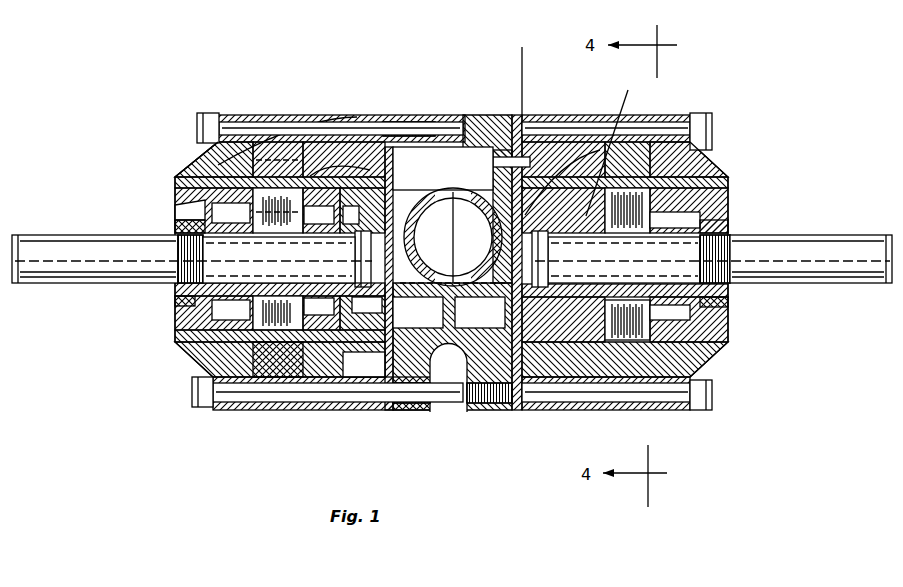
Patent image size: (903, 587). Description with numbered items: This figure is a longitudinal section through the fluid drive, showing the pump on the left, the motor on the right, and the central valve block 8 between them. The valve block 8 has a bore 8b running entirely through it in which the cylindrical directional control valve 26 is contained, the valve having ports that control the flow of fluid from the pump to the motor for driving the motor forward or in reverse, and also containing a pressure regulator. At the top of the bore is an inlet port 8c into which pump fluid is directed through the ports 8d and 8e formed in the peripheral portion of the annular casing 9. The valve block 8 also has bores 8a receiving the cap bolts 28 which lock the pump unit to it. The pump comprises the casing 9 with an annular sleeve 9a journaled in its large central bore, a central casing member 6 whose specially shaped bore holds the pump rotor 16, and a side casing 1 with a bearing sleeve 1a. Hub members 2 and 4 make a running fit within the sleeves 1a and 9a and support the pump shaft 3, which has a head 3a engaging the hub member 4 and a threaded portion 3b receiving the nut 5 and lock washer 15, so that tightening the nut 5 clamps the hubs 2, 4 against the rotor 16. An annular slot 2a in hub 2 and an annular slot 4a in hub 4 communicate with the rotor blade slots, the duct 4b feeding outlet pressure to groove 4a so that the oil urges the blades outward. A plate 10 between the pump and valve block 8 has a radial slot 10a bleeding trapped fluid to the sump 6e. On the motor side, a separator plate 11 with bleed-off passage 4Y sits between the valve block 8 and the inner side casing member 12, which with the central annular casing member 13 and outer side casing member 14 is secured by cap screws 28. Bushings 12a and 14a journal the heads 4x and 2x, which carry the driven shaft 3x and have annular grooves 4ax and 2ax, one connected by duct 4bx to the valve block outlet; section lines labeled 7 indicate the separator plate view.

The side casing 1 is at (205, 358).
The bearing sleeve 1a is at (197, 353).
The hub member 2 is at (195, 206).
The annular slot 2a is at (257, 210).
The annular groove 2ax is at (705, 193).
The head 2x is at (673, 217).
The pump shaft 3 is at (88, 276).
The head 3a is at (362, 312).
The threaded portion 3b is at (178, 290).
The driven shaft 3x is at (800, 244).
The hub member 4 is at (362, 237).
The annular slot 4a is at (321, 313).
The annular groove 4ax is at (617, 144).
The duct 4b is at (321, 210).
The duct 4bx is at (552, 267).
The head 4x is at (545, 290).
The bleed-off passage 4Y is at (480, 312).
The nut 5 is at (200, 225).
The central casing member 6 is at (276, 114).
The sump 6e is at (358, 380).
The section indicator 7 is at (537, 74).
The valve block 8 is at (470, 116).
The bores 8a is at (463, 412).
The bore 8b is at (473, 188).
The inlet port 8c is at (443, 168).
The port 8d is at (214, 152).
The port 8e is at (302, 128).
The annular casing 9 is at (320, 410).
The annular sleeve 9a is at (377, 172).
The plate 10 is at (402, 112).
The radial slot 10a is at (418, 312).
The separator plate 11 is at (513, 114).
The inner side casing member 12 is at (552, 116).
The bushing 12a is at (592, 410).
The central annular casing member 13 is at (640, 116).
The outer side casing member 14 is at (672, 117).
The bushing 14a is at (714, 343).
The lock washer 15 is at (187, 306).
The pump rotor 16 is at (239, 313).
The directional control valve 26 is at (455, 278).
The bolts 28 is at (216, 101).